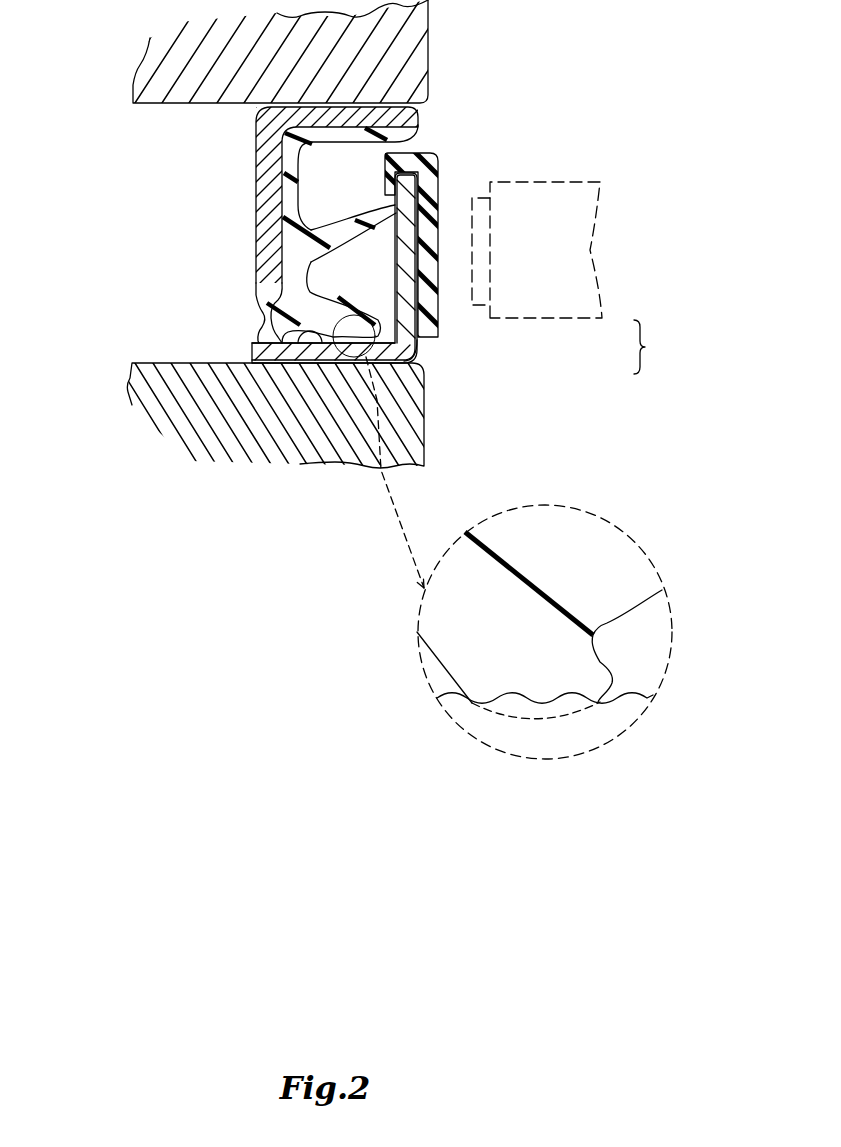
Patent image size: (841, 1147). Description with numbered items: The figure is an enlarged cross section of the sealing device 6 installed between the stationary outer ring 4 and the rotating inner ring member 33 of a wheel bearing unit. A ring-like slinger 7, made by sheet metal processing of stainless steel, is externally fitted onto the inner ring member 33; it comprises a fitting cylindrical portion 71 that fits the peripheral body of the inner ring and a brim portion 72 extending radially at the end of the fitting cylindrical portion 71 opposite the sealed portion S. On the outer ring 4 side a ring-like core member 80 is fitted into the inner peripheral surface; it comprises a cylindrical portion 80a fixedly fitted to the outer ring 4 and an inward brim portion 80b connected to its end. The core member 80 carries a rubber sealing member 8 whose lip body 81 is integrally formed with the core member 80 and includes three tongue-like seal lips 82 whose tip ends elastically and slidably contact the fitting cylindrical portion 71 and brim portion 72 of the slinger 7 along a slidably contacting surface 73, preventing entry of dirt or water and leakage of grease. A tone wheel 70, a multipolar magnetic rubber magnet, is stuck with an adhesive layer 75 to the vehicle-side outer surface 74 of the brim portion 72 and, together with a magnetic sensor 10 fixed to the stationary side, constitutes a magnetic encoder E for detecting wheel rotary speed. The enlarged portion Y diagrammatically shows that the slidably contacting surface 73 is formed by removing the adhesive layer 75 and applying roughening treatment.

The outer ring 4 is at (414, 46).
The inner ring member 33 is at (408, 429).
The sealing device 6 is at (170, 205).
The slinger 7 is at (456, 166).
The sealing member 8 is at (236, 282).
The magnetic sensor 10 is at (550, 302).
The tone wheel 70 is at (433, 273).
The fitting cylindrical portion 71 is at (250, 352).
The brim portion 72 is at (407, 300).
The slidably contacting surface 73 is at (418, 338).
The outer surface 74 is at (412, 222).
The adhesive layer 75 is at (421, 345).
The core member 80 is at (256, 182).
The cylindrical portion 80a is at (333, 118).
The inward brim portion 80b is at (256, 204).
The lip body 81 is at (293, 237).
The seal lips 82 is at (342, 228).
The magnetic encoder E is at (649, 347).
The sealed portion S is at (161, 287).
The portion Y is at (352, 352).